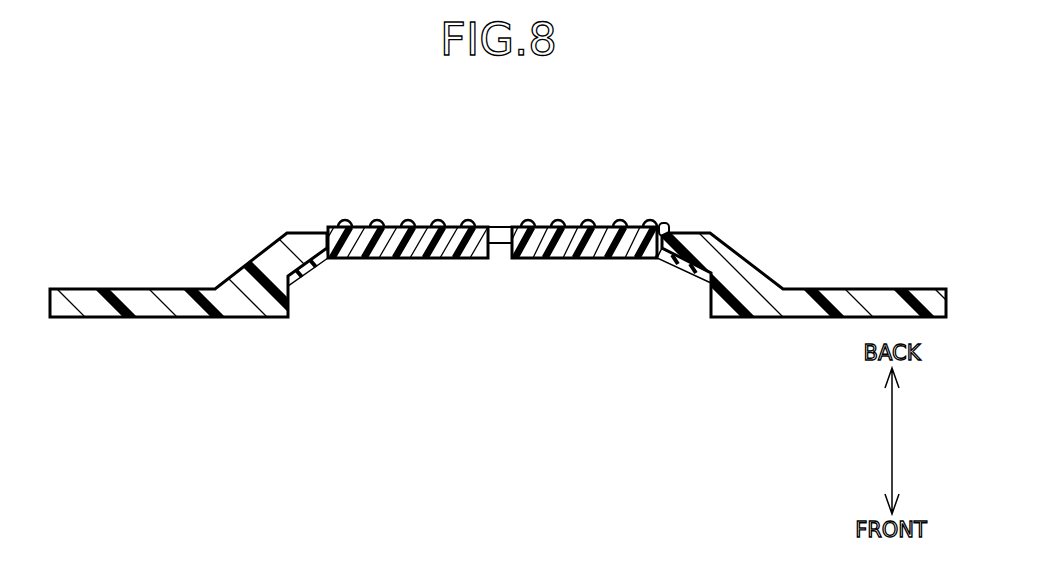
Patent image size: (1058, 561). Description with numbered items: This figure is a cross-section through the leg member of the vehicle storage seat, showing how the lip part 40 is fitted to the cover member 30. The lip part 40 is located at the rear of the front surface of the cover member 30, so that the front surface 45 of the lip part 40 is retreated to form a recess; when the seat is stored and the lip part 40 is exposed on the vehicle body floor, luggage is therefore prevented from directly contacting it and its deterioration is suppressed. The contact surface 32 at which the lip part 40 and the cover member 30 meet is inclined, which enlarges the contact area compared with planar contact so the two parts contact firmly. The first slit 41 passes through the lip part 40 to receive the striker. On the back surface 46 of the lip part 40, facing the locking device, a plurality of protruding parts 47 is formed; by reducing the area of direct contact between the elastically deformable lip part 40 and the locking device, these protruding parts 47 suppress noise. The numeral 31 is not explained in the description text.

The cover member 30 is at (877, 289).
The terminal portion 31 is at (663, 232).
The contact surface 32 is at (307, 252).
The lip part 40 is at (380, 264).
The first slit 41 is at (497, 248).
The front surface 45 is at (638, 260).
The back surface 46 is at (355, 225).
The protruding parts 47 is at (586, 222).